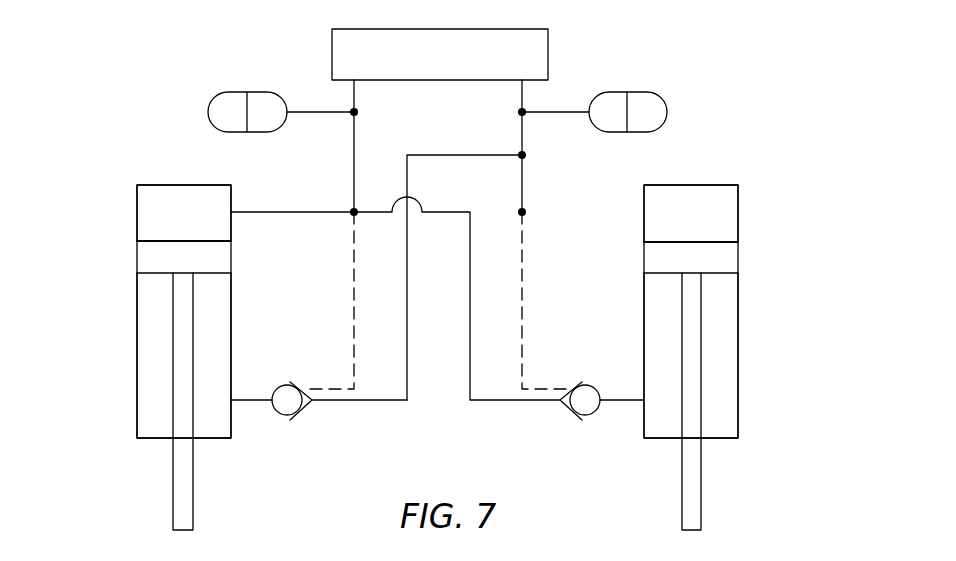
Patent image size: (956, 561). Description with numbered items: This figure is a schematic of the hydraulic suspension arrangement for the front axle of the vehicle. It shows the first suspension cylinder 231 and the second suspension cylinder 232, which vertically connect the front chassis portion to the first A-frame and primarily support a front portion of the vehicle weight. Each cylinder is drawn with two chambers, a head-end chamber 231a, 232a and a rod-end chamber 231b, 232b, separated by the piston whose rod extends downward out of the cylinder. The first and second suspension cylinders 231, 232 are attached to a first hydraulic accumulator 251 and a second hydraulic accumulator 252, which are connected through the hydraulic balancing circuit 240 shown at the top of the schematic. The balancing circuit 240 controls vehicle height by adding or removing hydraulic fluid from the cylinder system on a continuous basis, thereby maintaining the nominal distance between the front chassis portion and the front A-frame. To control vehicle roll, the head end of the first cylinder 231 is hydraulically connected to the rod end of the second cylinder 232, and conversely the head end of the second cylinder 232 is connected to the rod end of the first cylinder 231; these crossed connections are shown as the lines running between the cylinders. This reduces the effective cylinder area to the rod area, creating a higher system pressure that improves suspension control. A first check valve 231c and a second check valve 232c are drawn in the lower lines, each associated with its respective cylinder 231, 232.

The hydraulic balancing circuit 240 is at (443, 82).
The first hydraulic accumulator 251 is at (645, 92).
The second hydraulic accumulator 252 is at (218, 95).
The first suspension cylinder 231 is at (735, 341).
The upper chamber of cylinder 231a is at (730, 203).
The lower chamber of cylinder 231b is at (728, 407).
The check valve 231c is at (568, 413).
The second suspension cylinder 232 is at (142, 357).
The upper chamber of cylinder 232a is at (147, 212).
The lower chamber of cylinder 232b is at (145, 415).
The check valve 232c is at (297, 413).